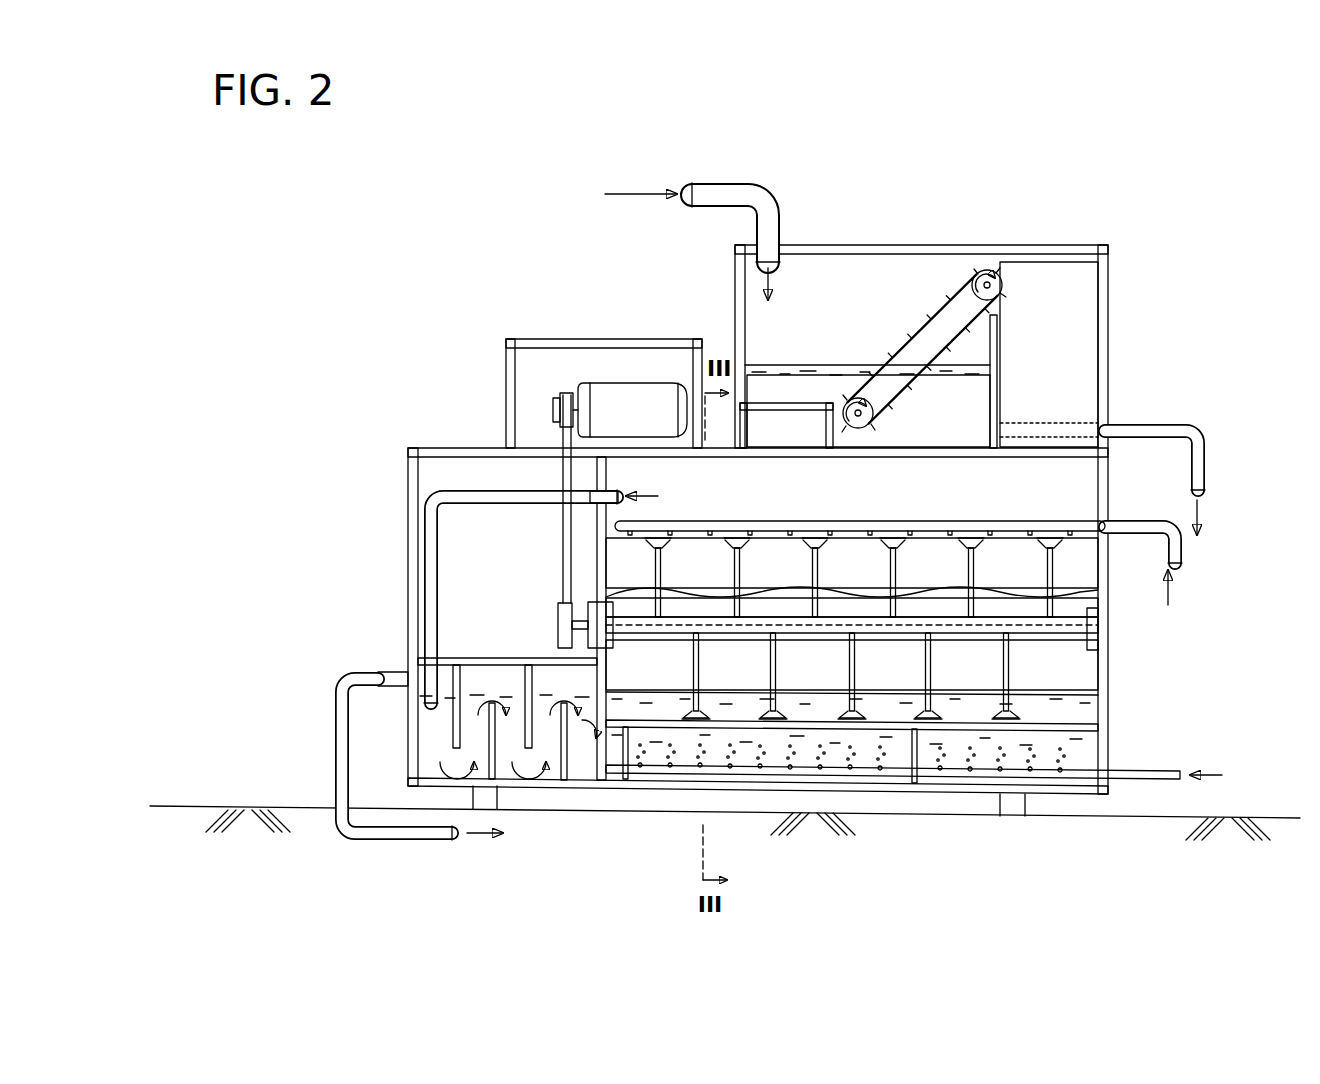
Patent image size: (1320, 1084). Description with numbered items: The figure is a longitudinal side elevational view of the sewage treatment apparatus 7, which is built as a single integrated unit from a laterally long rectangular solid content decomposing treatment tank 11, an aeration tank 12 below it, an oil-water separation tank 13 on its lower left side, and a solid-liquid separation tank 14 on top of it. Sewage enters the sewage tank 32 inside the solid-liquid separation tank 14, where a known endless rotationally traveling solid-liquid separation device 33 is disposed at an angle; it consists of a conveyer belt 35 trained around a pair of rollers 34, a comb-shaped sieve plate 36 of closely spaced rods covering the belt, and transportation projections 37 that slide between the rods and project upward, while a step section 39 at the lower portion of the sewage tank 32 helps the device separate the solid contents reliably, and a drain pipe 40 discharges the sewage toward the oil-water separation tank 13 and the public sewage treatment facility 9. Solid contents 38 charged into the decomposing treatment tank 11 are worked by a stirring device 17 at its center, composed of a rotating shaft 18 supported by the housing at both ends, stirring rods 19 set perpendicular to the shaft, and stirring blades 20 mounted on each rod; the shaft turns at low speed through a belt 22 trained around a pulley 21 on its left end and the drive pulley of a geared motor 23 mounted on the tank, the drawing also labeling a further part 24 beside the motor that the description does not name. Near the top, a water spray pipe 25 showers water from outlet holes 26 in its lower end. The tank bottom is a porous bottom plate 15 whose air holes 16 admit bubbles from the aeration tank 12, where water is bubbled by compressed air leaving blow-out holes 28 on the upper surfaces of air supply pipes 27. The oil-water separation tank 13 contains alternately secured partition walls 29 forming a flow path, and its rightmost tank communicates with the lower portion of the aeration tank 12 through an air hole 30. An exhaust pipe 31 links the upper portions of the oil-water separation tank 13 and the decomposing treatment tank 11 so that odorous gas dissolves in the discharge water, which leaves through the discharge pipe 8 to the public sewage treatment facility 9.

The sewage treatment apparatus 7 is at (1152, 170).
The discharge pipe 8 is at (338, 760).
The public sewage treatment facility 9 is at (1230, 550).
The solid content decomposing treatment tank 11 is at (1080, 503).
The aeration tank 12 is at (1100, 756).
The oil-water separation tank 13 is at (418, 672).
The solid-liquid separation tank 14 is at (1115, 258).
The bottom plate 15 is at (960, 730).
The air holes 16 is at (626, 730).
The stirring device 17 is at (1068, 580).
The rotating shaft 18 is at (1065, 632).
The stirring rods 19 is at (656, 590).
The stirring blades 20 is at (672, 540).
The pulley 21 is at (558, 645).
The belt 22 is at (562, 560).
The geared motor 23 is at (600, 385).
The bracket 24 is at (557, 397).
The water spray pipe 25 is at (820, 524).
The outlet holes 26 is at (710, 531).
The air supply pipes 27 is at (866, 762).
The blow-out holes 28 is at (762, 774).
The partition walls 29 is at (523, 680).
The air hole 30 is at (600, 772).
The exhaust pipe 31 is at (428, 552).
The sewage tank 32 is at (1000, 360).
The solid-liquid separation device 33 is at (940, 297).
The rollers 34 is at (968, 277).
The conveyer belt 35 is at (912, 307).
The comb-shaped sieve plate 36 is at (872, 368).
The transportation projections 37 is at (893, 348).
The solid contents 38 is at (1078, 602).
The step section 39 is at (786, 405).
The drain pipe 40 is at (1196, 420).